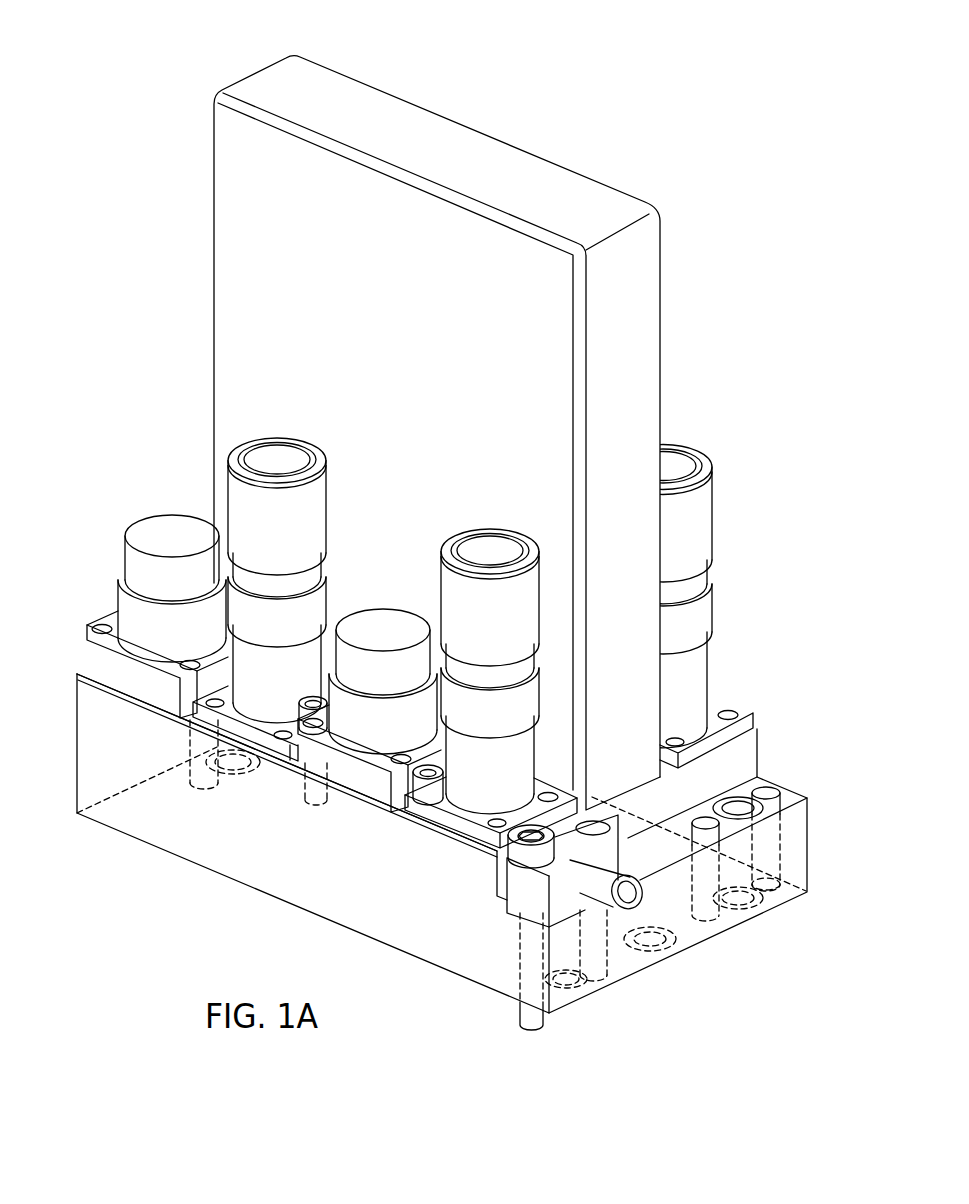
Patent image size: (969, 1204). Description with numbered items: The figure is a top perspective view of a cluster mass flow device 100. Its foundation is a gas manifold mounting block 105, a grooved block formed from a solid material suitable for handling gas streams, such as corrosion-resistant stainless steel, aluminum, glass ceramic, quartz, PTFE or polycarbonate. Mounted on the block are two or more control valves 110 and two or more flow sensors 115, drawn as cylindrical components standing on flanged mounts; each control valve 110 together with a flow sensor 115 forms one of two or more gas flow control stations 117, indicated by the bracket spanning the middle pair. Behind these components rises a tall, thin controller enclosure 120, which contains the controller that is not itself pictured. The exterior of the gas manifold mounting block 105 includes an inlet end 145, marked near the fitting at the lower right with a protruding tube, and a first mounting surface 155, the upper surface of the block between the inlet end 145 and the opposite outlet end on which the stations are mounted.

The cluster mass flow device 100 is at (713, 82).
The gas manifold mounting block 105 is at (303, 902).
The control valve 110 is at (320, 490).
The flow sensor 115 is at (168, 527).
The gas flow control station 117 is at (332, 533).
The controller enclosure 120 is at (222, 157).
The inlet end 145 is at (613, 925).
The first mounting surface 155 is at (85, 670).